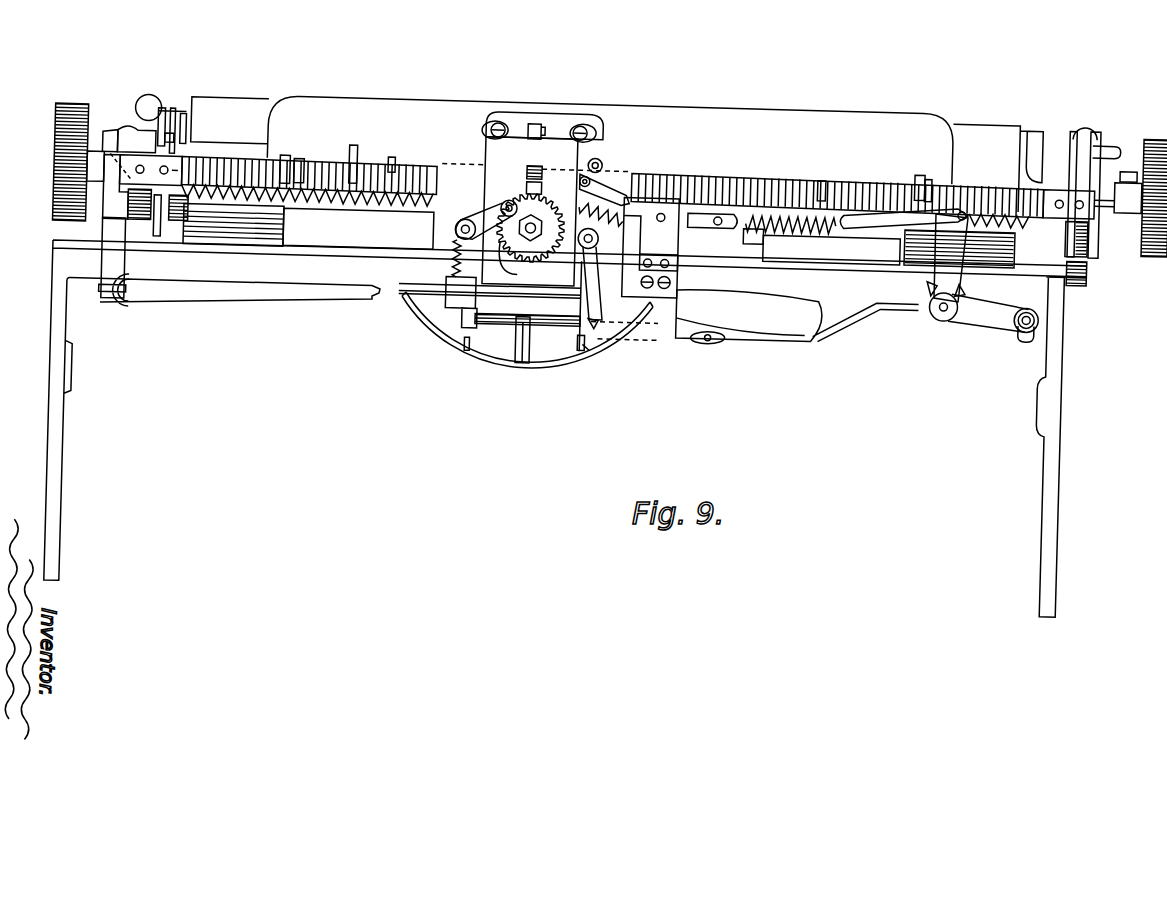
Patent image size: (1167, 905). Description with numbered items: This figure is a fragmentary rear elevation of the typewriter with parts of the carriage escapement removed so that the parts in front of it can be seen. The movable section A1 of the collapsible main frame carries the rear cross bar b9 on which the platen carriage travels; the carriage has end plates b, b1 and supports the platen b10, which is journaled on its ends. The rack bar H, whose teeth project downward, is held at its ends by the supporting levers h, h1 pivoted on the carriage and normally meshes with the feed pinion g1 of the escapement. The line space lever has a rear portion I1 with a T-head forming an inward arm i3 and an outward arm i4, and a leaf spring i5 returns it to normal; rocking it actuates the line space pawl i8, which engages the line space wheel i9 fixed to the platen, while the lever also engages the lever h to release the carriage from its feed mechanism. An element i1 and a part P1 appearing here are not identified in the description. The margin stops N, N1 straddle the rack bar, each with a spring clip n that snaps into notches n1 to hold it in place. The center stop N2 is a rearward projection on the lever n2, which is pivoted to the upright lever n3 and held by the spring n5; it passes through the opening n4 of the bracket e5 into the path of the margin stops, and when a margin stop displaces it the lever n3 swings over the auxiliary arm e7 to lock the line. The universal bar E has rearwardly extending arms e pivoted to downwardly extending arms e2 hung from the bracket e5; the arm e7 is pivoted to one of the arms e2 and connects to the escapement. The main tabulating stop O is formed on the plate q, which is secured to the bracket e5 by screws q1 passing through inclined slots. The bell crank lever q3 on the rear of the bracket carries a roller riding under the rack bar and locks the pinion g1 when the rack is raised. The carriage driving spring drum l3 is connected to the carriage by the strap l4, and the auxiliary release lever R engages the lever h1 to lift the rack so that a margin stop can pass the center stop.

The movable frame section A1 is at (56, 460).
The strap l4 is at (298, 304).
The carriage end plate b1 is at (140, 234).
The rack supporting lever h is at (116, 189).
The outwardly projecting arm i4 is at (111, 134).
The rear portion of line space lever I1 is at (125, 129).
The leaf spring i5 is at (136, 132).
The inwardly projecting arm i3 is at (160, 120).
The line space wheel i9 is at (182, 116).
The line space pawl i8 is at (171, 141).
The ratchet i1 is at (159, 203).
The platen b10 is at (230, 120).
The rear cross bar b9 is at (308, 241).
The rack bar H is at (760, 179).
The margin stop N is at (297, 159).
The spring clip n is at (282, 156).
The margin stop N1 is at (915, 178).
The notches n1 is at (379, 181).
The pointer P1 is at (358, 145).
The stop plate q is at (485, 138).
The screws q1 is at (498, 123).
The main tabulating stop O is at (536, 124).
The center stop N2 is at (527, 173).
The rectangular opening n4 is at (526, 190).
The feed pinion g1 is at (530, 253).
The bell crank lever q3 is at (473, 239).
The center stop lever n2 is at (600, 183).
The spring n5 is at (624, 203).
The upright lever n3 is at (595, 252).
The bracket e5 is at (585, 250).
The universal bar E is at (537, 363).
The downwardly extending arms e2 is at (460, 311).
The rearwardly extending arms e is at (467, 350).
The auxiliary arm e7 is at (596, 327).
The carriage driving spring drum l3 is at (733, 318).
The auxiliary carriage release lever R is at (1116, 145).
The rack supporting lever h1 is at (1098, 235).
The carriage end plate b is at (1082, 268).